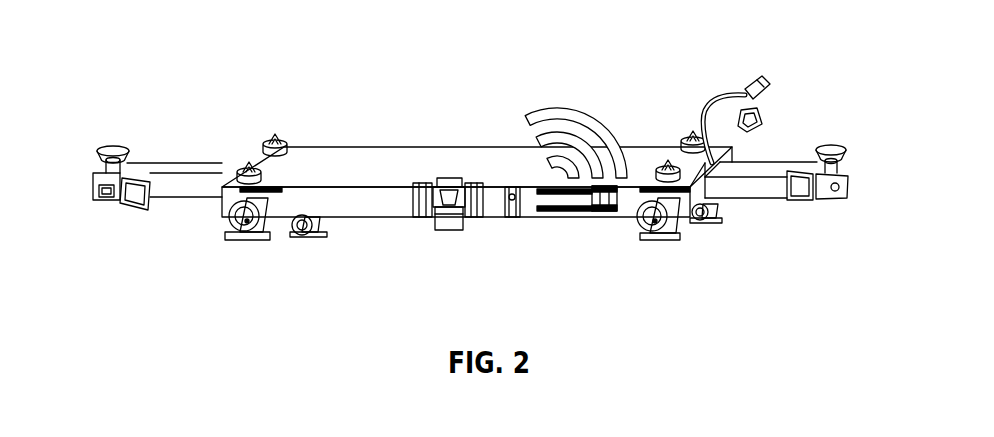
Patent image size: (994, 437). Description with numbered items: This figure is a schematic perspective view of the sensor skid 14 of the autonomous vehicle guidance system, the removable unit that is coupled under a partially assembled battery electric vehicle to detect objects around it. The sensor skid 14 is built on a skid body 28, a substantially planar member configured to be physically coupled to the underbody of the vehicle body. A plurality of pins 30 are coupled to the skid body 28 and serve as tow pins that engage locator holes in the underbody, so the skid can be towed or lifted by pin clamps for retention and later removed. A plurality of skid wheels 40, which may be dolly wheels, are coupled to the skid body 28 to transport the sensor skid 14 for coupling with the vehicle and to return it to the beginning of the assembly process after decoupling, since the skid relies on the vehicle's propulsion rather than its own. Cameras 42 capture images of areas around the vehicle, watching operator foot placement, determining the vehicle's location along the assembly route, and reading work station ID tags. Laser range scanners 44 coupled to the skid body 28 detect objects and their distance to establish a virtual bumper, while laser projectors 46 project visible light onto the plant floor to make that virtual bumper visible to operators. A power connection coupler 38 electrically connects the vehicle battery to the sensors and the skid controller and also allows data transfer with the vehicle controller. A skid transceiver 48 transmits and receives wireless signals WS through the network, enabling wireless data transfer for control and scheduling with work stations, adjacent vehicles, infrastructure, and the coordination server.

The sensor skid 14 is at (445, 111).
The skid body 28 is at (397, 157).
The pins 30 is at (250, 170).
The power connection coupler 38 is at (733, 93).
The skid wheels 40 is at (230, 222).
The cameras 42 is at (133, 200).
The laser range scanners 44 is at (90, 182).
The laser projectors 46 is at (511, 187).
The skid transceiver 48 is at (562, 212).
The wireless signals WS is at (567, 108).